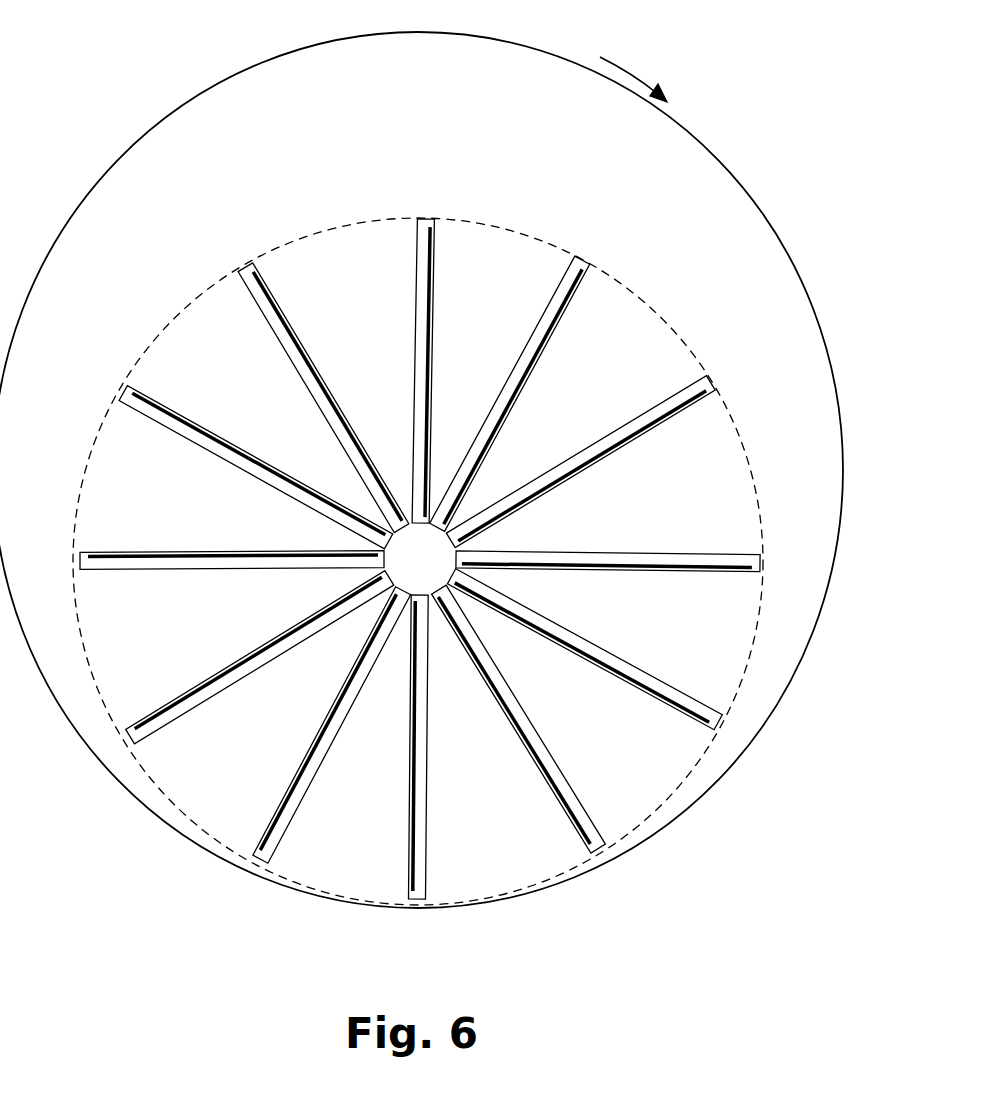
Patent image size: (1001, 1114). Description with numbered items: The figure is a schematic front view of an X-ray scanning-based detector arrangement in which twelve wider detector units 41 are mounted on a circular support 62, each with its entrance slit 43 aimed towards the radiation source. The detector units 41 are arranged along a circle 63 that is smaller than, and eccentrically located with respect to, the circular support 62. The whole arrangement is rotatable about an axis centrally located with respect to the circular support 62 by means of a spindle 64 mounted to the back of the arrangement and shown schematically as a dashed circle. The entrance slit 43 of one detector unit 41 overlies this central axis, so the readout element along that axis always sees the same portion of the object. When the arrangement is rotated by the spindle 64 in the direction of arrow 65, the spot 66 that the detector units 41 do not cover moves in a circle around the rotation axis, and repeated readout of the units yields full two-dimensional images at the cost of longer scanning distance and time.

The circular support 62 is at (124, 195).
The circle 63 is at (672, 328).
The detector unit 41 is at (250, 270).
The entrance slit 43 is at (238, 273).
The spindle 64 is at (421, 483).
The arrow 65 is at (620, 63).
The spot 66 is at (430, 567).